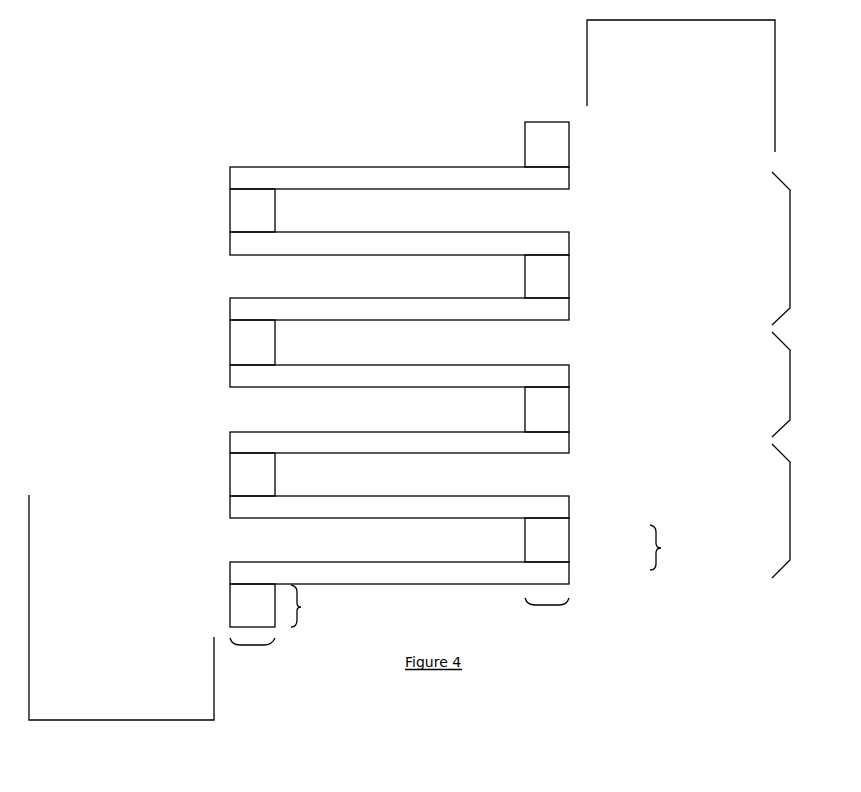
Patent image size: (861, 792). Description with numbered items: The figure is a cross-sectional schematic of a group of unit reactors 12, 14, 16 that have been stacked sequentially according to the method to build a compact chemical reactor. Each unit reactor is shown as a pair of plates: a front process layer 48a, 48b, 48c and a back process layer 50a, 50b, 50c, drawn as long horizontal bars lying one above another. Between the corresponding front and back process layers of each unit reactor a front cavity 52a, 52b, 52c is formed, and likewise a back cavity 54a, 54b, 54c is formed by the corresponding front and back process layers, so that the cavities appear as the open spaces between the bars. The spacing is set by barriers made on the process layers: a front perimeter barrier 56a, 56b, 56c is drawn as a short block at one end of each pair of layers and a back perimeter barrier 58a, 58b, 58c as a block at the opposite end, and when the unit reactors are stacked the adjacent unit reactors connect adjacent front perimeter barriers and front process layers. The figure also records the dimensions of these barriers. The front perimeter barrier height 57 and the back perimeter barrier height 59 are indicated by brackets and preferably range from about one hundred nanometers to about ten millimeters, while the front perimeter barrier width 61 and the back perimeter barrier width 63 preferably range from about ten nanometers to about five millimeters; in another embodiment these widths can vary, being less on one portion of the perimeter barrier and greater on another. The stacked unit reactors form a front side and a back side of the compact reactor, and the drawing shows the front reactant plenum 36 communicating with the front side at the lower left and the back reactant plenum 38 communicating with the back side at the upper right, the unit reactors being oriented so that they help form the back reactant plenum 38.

The unit reactor 12 is at (790, 382).
The unit reactor 14 is at (790, 493).
The unit reactor 16 is at (790, 252).
The front reactant plenum 36 is at (136, 703).
The back reactant plenum 38 is at (752, 80).
The front process layer 48a is at (242, 444).
The front process layer 48b is at (242, 582).
The front process layer 48c is at (242, 310).
The back process layer 50a is at (567, 378).
The back process layer 50b is at (560, 512).
The back process layer 50c is at (558, 248).
The front cavity 52a is at (240, 418).
The front cavity 52b is at (232, 538).
The front cavity 52c is at (238, 279).
The back cavity 54a is at (558, 345).
The back cavity 54b is at (565, 487).
The back cavity 54c is at (565, 209).
The front perimeter barrier 56a is at (242, 375).
The front perimeter barrier 56b is at (238, 475).
The front perimeter barrier 56c is at (242, 211).
The front perimeter barrier height 57 is at (661, 548).
The back perimeter barrier 58a is at (553, 407).
The back perimeter barrier 58b is at (560, 547).
The back perimeter barrier 58c is at (563, 289).
The back perimeter barrier height 59 is at (301, 607).
The front perimeter barrier width 61 is at (547, 605).
The back perimeter barrier width 63 is at (252, 645).